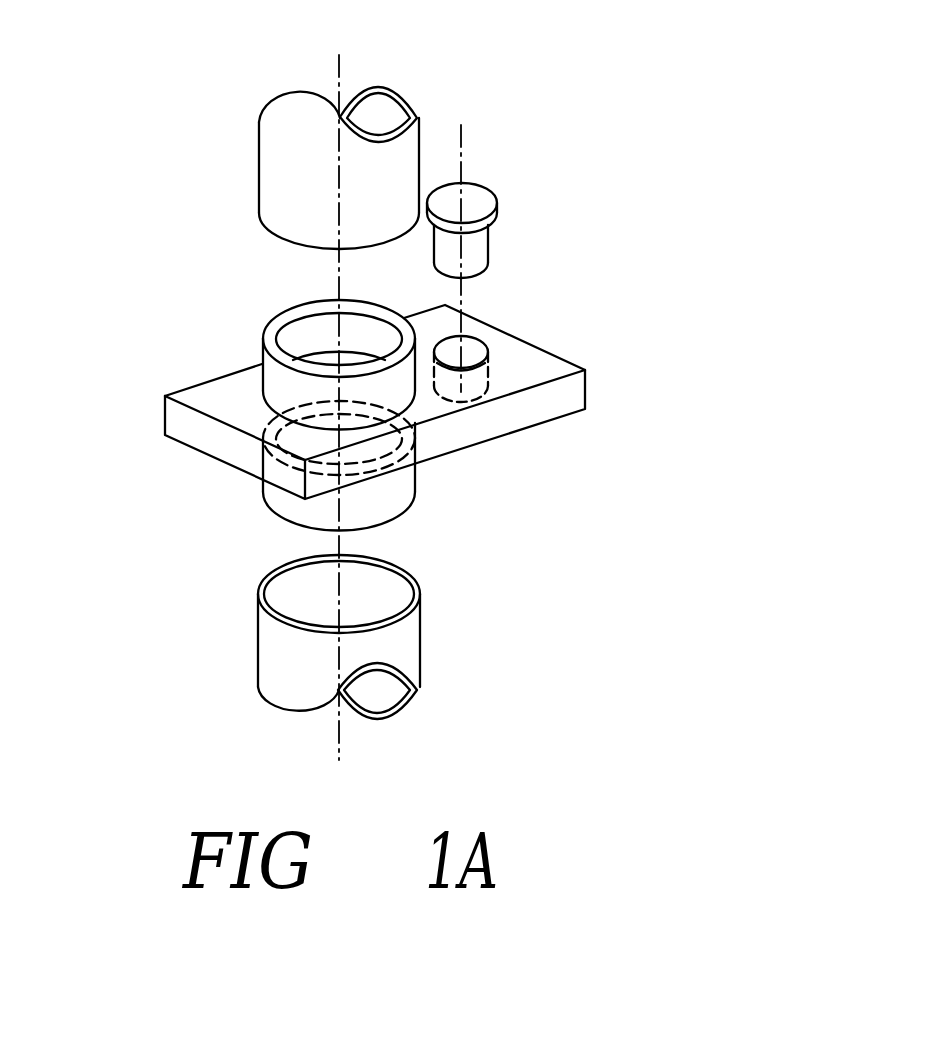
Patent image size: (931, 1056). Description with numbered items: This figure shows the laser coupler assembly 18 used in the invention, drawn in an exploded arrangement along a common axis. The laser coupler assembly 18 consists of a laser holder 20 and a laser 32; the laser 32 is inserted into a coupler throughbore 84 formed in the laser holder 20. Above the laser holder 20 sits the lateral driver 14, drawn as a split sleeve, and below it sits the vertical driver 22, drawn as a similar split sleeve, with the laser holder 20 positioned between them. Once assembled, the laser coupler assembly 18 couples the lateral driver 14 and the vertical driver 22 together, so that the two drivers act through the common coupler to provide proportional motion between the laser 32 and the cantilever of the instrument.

The lateral driver 14 is at (273, 168).
The laser coupler assembly 18 is at (622, 90).
The laser holder 20 is at (508, 361).
The vertical driver 22 is at (395, 642).
The laser 32 is at (481, 248).
The coupler throughbore 84 is at (480, 350).